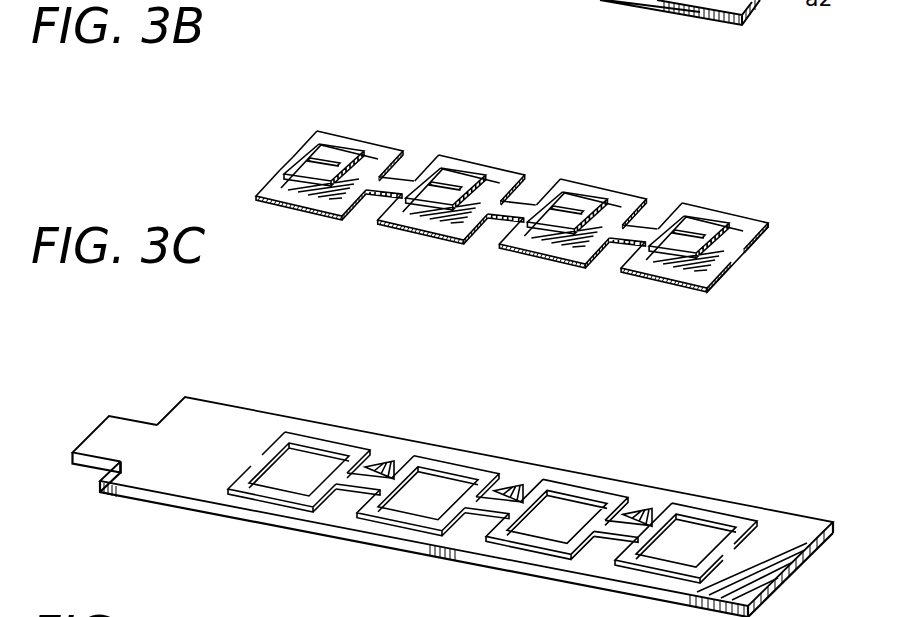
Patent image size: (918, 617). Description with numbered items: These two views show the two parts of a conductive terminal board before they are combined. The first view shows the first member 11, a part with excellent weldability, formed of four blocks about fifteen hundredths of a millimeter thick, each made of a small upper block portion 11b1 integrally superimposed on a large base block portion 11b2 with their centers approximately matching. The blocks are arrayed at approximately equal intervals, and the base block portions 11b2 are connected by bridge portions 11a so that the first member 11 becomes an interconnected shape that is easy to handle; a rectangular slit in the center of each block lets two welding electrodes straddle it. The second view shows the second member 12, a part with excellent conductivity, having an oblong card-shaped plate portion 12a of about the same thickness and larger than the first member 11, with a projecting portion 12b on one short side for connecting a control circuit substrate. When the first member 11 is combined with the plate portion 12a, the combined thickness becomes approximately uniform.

In FIG. 3B, the first member 11 is at (535, 176).
In FIG. 3B, the bridge portions 11a is at (516, 203).
In FIG. 3B, the upper block portion 11b1 is at (712, 218).
In FIG. 3B, the base block portion 11b2 is at (762, 224).
In FIG. 3C, the second member 12 is at (453, 468).
In FIG. 3C, the plate portion 12a is at (255, 430).
In FIG. 3C, the projecting portion 12b is at (129, 415).